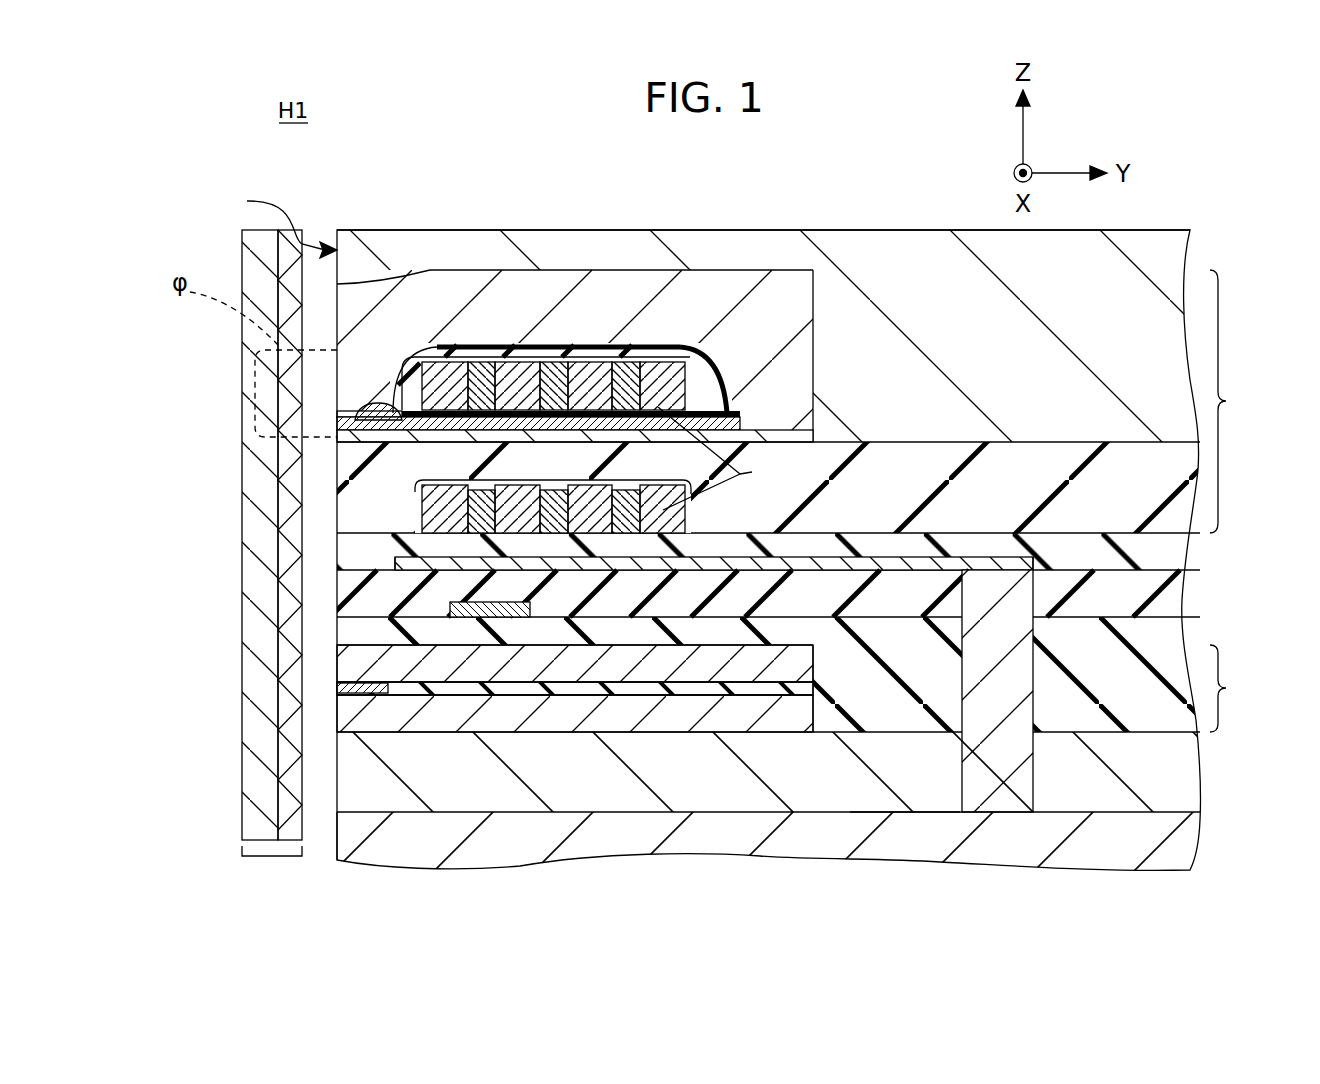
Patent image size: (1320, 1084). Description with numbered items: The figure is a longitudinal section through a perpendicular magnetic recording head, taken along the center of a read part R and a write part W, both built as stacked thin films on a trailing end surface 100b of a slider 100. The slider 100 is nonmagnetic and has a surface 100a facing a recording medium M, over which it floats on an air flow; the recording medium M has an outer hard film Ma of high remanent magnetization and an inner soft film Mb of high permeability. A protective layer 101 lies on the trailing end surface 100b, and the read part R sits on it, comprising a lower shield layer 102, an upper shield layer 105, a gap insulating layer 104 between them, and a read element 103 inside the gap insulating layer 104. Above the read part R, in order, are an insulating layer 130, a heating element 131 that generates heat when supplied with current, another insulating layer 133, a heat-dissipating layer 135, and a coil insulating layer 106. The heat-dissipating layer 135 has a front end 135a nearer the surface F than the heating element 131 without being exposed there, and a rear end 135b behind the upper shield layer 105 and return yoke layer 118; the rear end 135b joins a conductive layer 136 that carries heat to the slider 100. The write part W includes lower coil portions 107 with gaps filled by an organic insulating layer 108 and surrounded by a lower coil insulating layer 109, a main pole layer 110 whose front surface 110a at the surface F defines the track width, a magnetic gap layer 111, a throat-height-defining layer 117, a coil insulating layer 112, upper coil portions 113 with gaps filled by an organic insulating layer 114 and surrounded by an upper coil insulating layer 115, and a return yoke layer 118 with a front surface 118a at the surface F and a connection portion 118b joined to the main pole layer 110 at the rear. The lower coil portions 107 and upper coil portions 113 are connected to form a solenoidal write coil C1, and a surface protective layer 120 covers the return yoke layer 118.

The slider 100 is at (828, 858).
The surface facing the recording medium 100a is at (337, 860).
The trailing end surface 100b is at (903, 803).
The protective layer 101 is at (347, 765).
The lower shield layer 102 is at (347, 715).
The read element 103 is at (347, 687).
The gap insulating layer 104 is at (745, 690).
The upper shield layer 105 is at (347, 658).
The coil insulating layer 106 is at (347, 547).
The lower coil portions 107 is at (353, 455).
The organic insulating layer 108 is at (440, 508).
The lower coil insulating layer 109 is at (355, 512).
The main pole layer 110 is at (340, 438).
The front surface of the main pole layer 110a is at (340, 430).
The magnetic gap layer 111 is at (340, 423).
The coil insulating layer 112 is at (405, 360).
The upper coil portions 113 is at (545, 345).
The organic insulating layer 114 is at (697, 374).
The upper coil insulating layer 115 is at (445, 348).
The throat-height-defining layer 117 is at (395, 398).
The return yoke layer 118 is at (612, 283).
The front surface of the return yoke layer 118a is at (337, 284).
The connection portion 118b is at (780, 303).
The surface protective layer 120 is at (493, 250).
The insulating layer 130 is at (347, 628).
The heating element 131 is at (490, 618).
The insulating layer 133 is at (347, 592).
The heat-dissipating layer 135 is at (625, 567).
The front end of the heat-dissipating layer 135a is at (395, 558).
The rear end of the heat-dissipating layer 135b is at (1043, 563).
The conductive layer 136 is at (1000, 795).
The solenoidal write coil C1 is at (727, 458).
The surface facing the recording medium F is at (281, 220).
The recording medium M is at (236, 563).
The hard film Ma is at (258, 842).
The soft film Mb is at (288, 812).
The write part W is at (1231, 401).
The read part R is at (1229, 688).